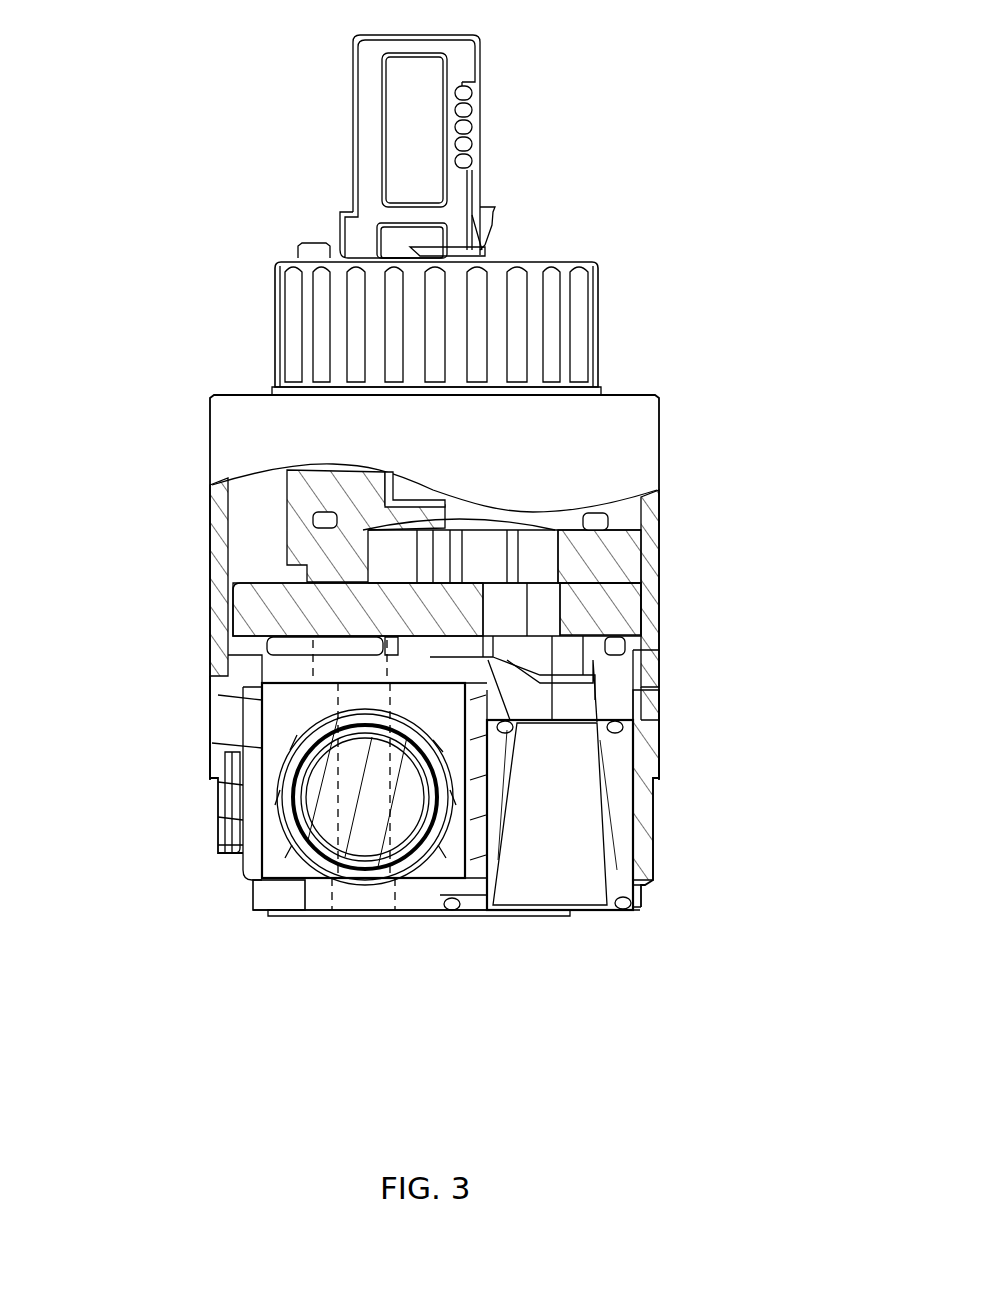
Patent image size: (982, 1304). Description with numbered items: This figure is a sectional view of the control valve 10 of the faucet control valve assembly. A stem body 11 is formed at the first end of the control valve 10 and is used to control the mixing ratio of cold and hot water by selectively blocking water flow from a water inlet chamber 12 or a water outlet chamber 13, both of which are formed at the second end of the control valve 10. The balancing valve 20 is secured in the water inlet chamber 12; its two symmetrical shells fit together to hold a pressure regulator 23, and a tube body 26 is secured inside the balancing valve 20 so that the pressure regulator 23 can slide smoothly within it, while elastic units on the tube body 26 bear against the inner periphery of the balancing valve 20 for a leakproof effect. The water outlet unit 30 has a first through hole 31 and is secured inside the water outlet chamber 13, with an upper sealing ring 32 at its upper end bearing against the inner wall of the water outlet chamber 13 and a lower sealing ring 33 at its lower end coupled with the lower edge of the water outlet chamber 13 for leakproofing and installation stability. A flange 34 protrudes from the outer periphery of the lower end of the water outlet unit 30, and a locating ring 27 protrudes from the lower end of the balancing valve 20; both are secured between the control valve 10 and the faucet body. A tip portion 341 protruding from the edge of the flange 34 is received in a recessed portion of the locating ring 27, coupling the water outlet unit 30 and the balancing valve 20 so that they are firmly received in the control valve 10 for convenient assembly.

The control valve 10 is at (613, 310).
The stem body 11 is at (412, 122).
The water inlet chamber 12 is at (640, 765).
The water outlet chamber 13 is at (262, 715).
The balancing valve 20 is at (270, 853).
The pressure regulator 23 is at (375, 830).
The tube body 26 is at (320, 880).
The locating ring 27 is at (253, 900).
The water outlet unit 30 is at (633, 818).
The first through hole 31 is at (505, 835).
The upper sealing ring 32 is at (612, 722).
The lower sealing ring 33 is at (625, 905).
The flange 34 is at (645, 898).
The tip portion 341 is at (462, 878).